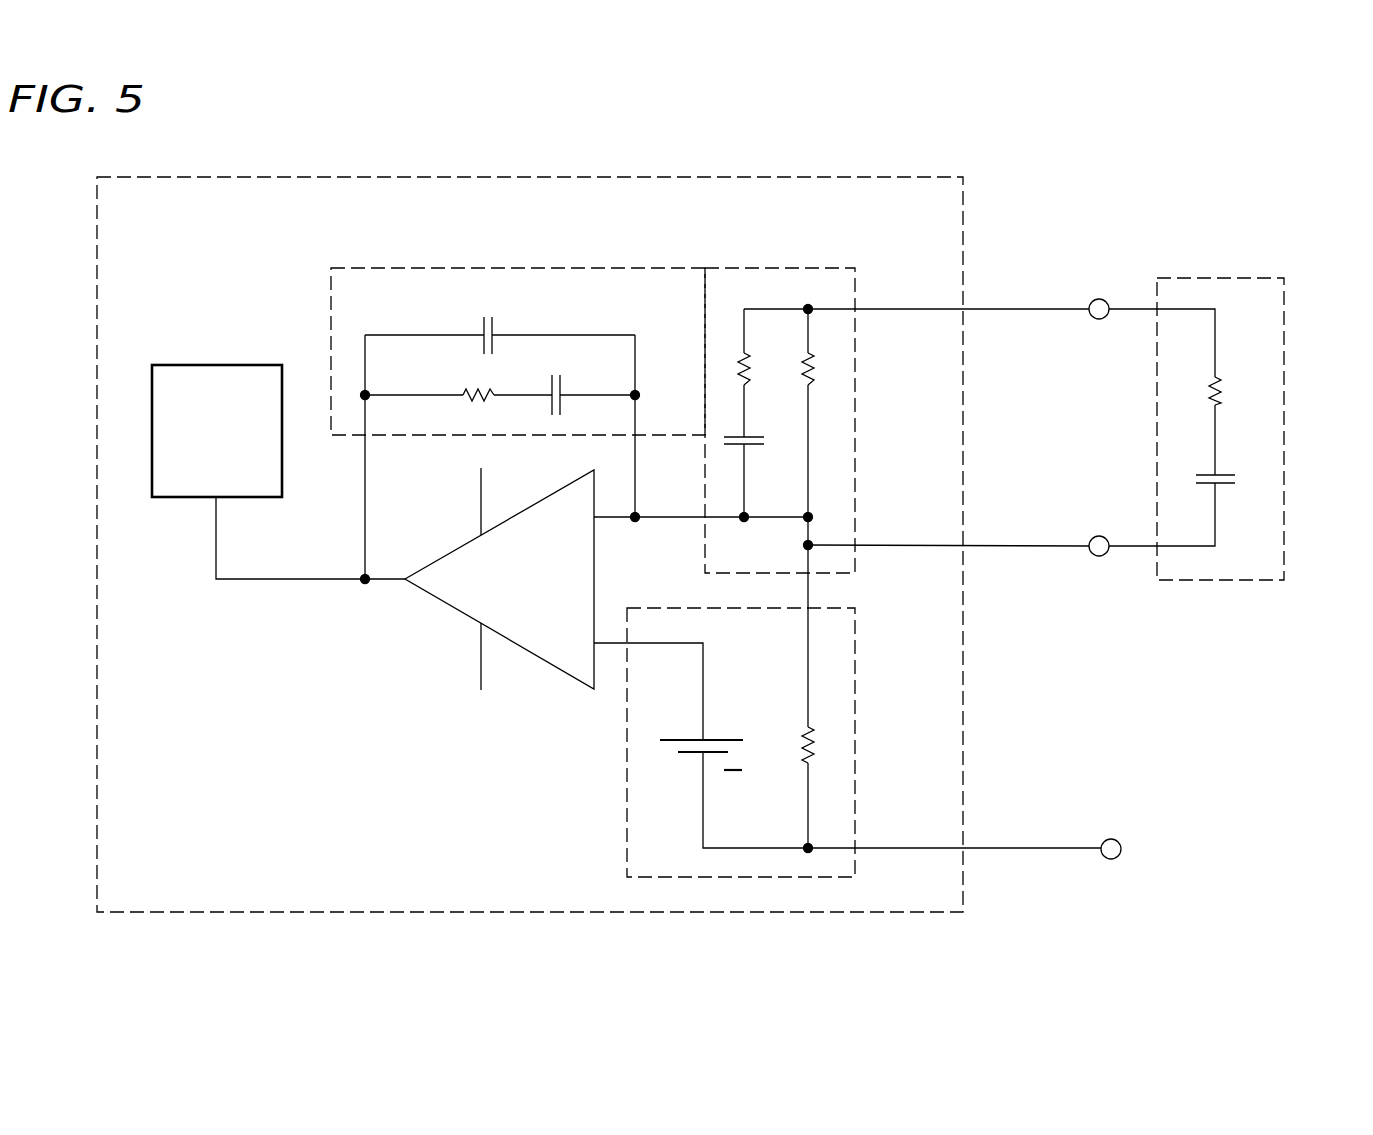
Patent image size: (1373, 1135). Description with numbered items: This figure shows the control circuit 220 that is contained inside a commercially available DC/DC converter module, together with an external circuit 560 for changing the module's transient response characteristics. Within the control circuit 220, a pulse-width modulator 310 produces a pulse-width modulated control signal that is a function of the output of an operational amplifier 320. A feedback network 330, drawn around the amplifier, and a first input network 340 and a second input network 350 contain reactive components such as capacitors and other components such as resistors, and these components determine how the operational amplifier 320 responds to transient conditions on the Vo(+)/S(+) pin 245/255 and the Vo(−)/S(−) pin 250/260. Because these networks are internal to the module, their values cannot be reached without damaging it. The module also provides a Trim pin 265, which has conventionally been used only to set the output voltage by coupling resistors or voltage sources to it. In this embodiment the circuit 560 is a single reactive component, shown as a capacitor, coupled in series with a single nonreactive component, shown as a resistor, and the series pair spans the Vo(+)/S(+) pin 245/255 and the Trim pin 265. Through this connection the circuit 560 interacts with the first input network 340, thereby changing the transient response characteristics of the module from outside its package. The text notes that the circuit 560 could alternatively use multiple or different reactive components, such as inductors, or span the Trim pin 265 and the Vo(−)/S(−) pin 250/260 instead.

The control circuit 220 is at (858, 175).
The pulse-width modulator 310 is at (201, 468).
The operational amplifier 320 is at (503, 593).
The feedback network 330 is at (567, 267).
The first input network 340 is at (857, 383).
The second input network 350 is at (857, 707).
The Vo(+) pin 245 is at (979, 286).
The S(+) pin 255 is at (1103, 298).
The Trim pin 265 is at (1100, 535).
The Vo(−) pin 250 is at (1119, 831).
The S(−) pin 260 is at (1118, 839).
The circuit for changing transient response characteristics 560 is at (1287, 320).